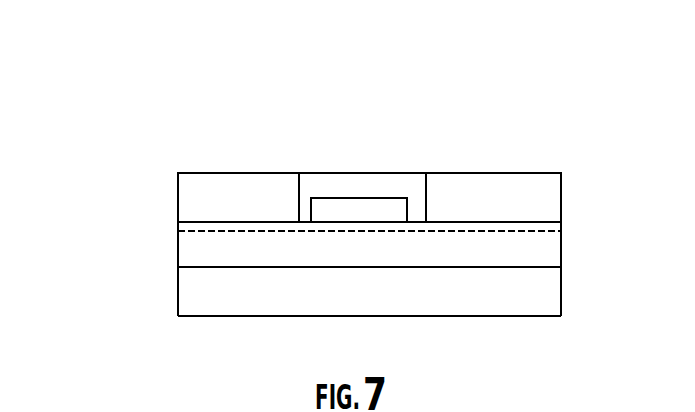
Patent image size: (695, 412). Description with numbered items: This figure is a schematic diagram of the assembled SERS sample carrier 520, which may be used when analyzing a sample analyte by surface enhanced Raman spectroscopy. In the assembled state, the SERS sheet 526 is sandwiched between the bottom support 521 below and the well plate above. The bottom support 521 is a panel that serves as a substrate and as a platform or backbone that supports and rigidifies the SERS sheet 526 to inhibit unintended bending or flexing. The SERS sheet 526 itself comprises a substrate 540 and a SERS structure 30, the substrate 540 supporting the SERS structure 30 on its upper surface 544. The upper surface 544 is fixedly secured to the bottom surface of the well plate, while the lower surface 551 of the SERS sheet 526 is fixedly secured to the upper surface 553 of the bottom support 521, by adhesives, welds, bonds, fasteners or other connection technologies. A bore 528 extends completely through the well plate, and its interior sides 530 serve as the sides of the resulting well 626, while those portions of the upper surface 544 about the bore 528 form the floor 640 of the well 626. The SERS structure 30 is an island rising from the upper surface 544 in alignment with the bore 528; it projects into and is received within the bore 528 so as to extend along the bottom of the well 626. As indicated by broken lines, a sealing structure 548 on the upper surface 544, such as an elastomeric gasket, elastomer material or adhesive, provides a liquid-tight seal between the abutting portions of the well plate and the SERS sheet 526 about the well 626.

The SERS sample carrier 520 is at (168, 116).
The bottom support 521 is at (178, 290).
The SERS sheet 526 is at (177, 247).
The bore 528 is at (392, 173).
The interior sides 530 is at (427, 193).
The SERS structure 30 is at (344, 204).
The well 626 is at (310, 222).
The floor 640 is at (302, 221).
The upper surface 544 is at (513, 222).
The sealing structure 548 is at (513, 231).
The substrate 540 is at (210, 267).
The lower surface 551 is at (388, 267).
The upper surface 553 is at (491, 268).